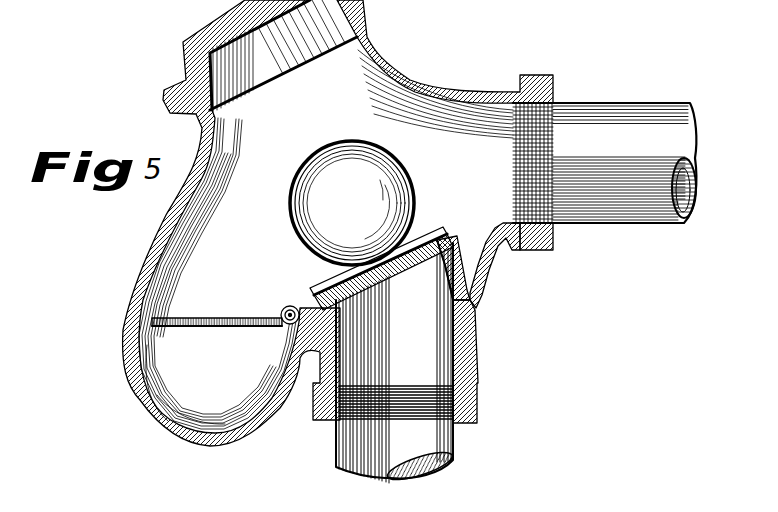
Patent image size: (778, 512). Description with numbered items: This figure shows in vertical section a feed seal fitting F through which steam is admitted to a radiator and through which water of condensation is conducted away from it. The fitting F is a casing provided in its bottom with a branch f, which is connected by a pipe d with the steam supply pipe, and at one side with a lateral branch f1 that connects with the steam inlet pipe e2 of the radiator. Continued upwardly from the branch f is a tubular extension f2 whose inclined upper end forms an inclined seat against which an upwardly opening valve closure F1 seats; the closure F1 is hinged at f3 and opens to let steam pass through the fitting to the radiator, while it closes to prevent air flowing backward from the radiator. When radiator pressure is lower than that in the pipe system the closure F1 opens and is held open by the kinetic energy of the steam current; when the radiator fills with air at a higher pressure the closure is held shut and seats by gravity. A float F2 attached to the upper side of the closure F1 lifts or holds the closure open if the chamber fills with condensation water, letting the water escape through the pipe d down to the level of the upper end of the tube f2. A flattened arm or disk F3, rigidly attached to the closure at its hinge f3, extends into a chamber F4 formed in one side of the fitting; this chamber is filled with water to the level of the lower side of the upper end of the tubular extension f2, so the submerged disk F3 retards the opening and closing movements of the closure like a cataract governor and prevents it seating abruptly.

The fitting F is at (430, 57).
The valve closure F1 is at (452, 232).
The float F2 is at (352, 203).
The flattened arm or disk F3 is at (215, 318).
The chamber F4 is at (150, 396).
The branch f is at (490, 348).
The lateral branch f1 is at (508, 248).
The tubular extension f2 is at (458, 258).
The hinge f3 is at (298, 306).
The pipe d is at (457, 452).
The steam inlet pipe e2 is at (604, 184).